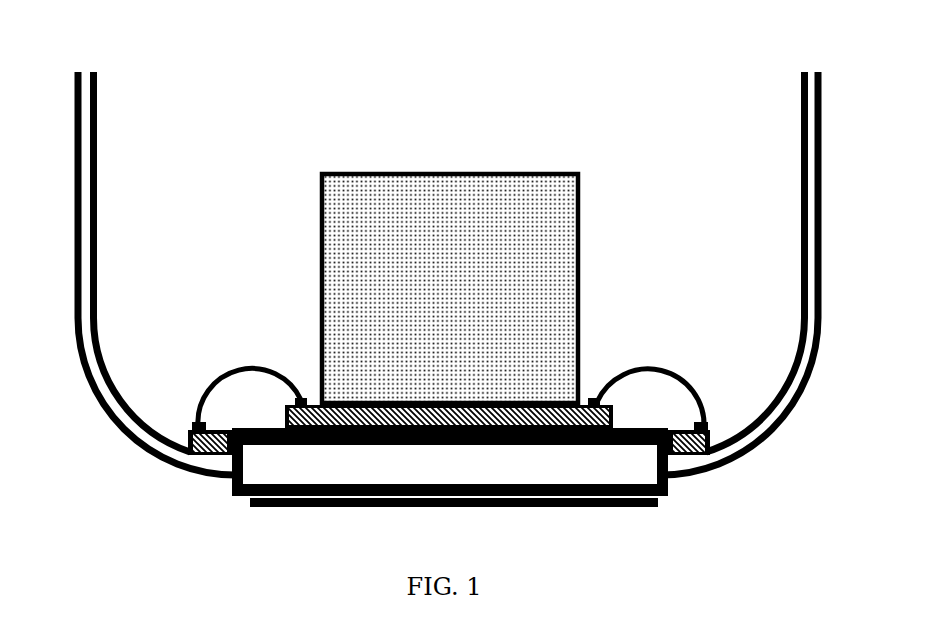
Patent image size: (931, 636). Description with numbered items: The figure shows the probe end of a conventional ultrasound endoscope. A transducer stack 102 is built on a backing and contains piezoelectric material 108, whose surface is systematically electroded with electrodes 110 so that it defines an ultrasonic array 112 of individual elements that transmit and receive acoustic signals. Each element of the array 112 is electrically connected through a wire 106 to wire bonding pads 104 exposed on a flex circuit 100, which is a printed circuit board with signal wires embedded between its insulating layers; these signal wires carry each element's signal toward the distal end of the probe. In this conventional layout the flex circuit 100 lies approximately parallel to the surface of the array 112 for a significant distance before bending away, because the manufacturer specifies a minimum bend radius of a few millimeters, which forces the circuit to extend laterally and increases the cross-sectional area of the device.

The flex circuit, printed circuit board 100 is at (98, 213).
The transducer stack, backing 102 is at (415, 190).
The wire bonding pads 104 is at (190, 418).
The wire to/from array element 106 is at (220, 367).
The piezoelectric material 108 is at (425, 478).
The electrodes 110 is at (663, 503).
The array, ultrasonic array 112 is at (583, 407).